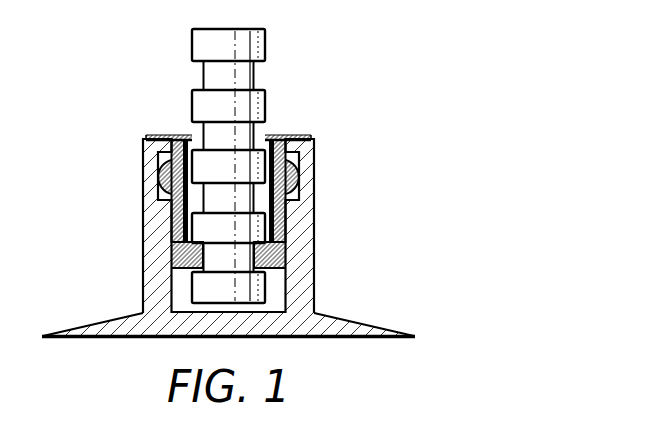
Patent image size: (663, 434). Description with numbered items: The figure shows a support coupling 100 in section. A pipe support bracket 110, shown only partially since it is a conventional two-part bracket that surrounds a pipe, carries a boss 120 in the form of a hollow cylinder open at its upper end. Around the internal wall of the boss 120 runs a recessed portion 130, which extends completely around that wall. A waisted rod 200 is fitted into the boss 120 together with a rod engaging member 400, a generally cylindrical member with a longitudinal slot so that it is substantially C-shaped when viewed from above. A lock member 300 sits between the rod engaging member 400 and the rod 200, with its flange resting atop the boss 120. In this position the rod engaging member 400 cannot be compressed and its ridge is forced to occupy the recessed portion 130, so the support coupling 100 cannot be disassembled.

The support coupling 100 is at (116, 64).
The pipe support bracket 110 is at (98, 322).
The boss 120 is at (143, 225).
The recessed portion 130 is at (300, 193).
The waisted rod 200 is at (274, 39).
The lock member 300 is at (305, 125).
The rod engaging member 400 is at (291, 261).